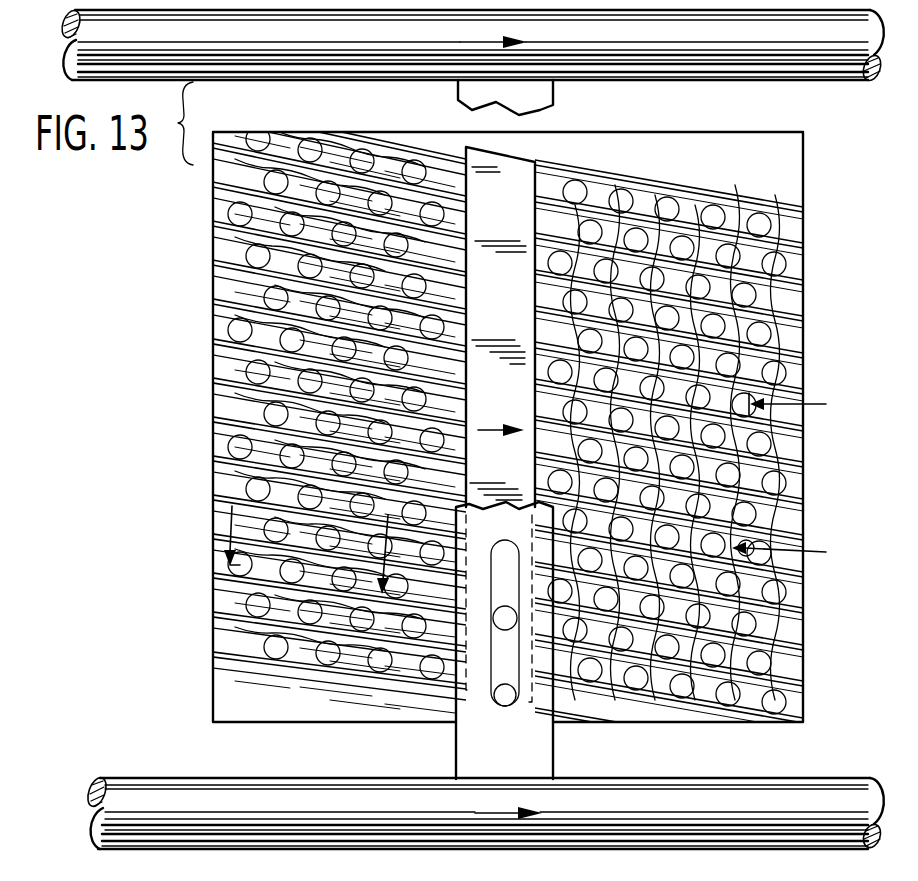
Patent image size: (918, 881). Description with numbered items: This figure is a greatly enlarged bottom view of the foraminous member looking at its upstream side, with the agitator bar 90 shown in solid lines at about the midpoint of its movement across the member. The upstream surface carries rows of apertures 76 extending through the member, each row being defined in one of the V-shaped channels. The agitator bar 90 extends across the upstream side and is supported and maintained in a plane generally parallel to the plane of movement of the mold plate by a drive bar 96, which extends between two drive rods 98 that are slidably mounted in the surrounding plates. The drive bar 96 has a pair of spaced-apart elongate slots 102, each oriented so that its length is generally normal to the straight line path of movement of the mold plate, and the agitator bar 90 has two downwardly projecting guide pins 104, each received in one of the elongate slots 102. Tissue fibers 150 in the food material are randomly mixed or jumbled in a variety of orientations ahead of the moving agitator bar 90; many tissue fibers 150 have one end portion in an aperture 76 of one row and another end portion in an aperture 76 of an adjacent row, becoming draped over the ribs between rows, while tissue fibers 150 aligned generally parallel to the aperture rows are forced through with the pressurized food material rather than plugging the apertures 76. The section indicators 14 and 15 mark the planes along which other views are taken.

The section line 14- 14 is at (798, 482).
The section line 15- 15 is at (301, 530).
The apertures 76 is at (453, 150).
The agitator bar 90 is at (545, 168).
The drive bar 96 is at (537, 97).
The drive rods 98 is at (737, 62).
The elongate slots 102 is at (508, 708).
The guide pins 104 is at (490, 590).
The tissue fibers 150 is at (775, 208).